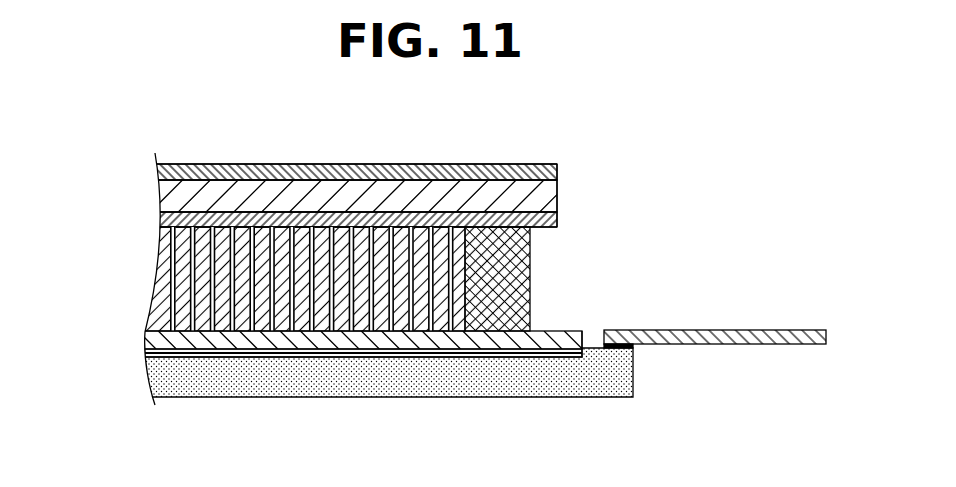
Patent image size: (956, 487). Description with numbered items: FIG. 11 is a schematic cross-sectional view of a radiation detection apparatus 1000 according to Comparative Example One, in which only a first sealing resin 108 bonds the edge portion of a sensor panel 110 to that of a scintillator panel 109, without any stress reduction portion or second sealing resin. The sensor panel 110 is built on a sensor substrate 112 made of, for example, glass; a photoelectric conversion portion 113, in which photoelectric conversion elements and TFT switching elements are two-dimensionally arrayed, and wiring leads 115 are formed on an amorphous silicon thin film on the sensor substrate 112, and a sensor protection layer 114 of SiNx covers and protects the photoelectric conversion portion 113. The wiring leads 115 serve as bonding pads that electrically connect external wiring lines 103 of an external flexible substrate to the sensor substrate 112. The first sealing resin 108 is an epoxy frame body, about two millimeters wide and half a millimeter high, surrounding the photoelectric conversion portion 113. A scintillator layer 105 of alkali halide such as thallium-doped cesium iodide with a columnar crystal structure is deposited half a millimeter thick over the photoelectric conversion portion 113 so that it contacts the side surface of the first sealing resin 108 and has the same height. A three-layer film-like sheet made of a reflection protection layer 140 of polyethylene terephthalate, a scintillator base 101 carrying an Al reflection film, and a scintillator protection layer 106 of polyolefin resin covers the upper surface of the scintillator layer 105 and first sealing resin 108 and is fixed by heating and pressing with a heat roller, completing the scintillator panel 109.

The radiation detection apparatus 1000 is at (445, 100).
The reflection protection layer 140 is at (197, 164).
The scintillator base 101 is at (272, 187).
The scintillator protection layer 106 is at (340, 222).
The scintillator layer 105 is at (453, 242).
The first sealing resin 108 is at (532, 274).
The scintillator panel 109 is at (108, 163).
The sensor panel 110 is at (108, 333).
The sensor substrate 112 is at (230, 380).
The photoelectric conversion portion 113 is at (337, 353).
The sensor protection layer 114 is at (431, 340).
The external wiring lines 103 is at (748, 331).
The wiring leads 115 is at (630, 347).